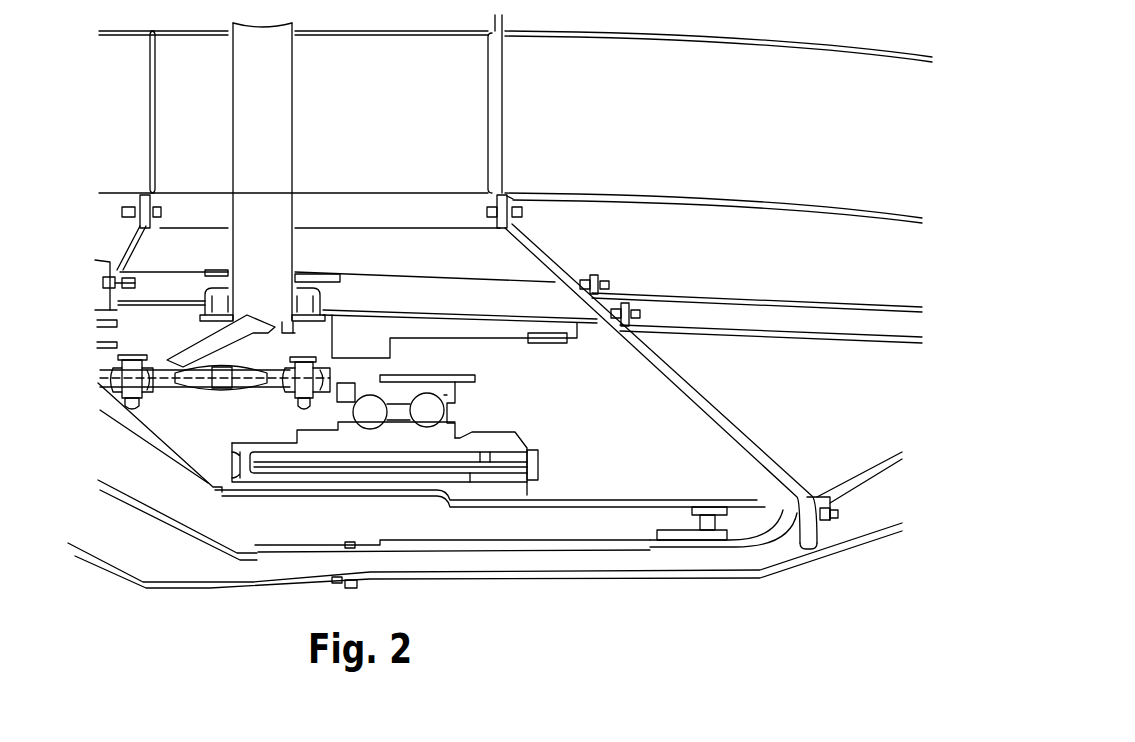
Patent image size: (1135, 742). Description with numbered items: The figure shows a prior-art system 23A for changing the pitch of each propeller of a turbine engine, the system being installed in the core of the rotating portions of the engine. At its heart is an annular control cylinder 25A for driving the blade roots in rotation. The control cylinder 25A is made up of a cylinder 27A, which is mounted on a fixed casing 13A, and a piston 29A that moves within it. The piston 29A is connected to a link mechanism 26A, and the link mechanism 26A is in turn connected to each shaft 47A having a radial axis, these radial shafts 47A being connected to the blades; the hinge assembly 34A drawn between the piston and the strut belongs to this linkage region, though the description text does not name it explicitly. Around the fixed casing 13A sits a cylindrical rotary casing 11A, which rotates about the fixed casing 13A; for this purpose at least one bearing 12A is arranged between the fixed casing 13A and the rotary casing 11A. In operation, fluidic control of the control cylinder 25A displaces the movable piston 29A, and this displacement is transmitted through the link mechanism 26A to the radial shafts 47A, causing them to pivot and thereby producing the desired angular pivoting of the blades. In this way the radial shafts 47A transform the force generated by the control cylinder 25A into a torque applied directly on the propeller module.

The cylindrical rotary casing 11A is at (725, 186).
The shaft having a radial axis 47A is at (262, 148).
The link mechanism 26A is at (168, 337).
The hinge assembly 34A is at (445, 392).
The control cylinder 25A is at (545, 434).
The cylinder 27A is at (617, 497).
The bearing 12A is at (715, 527).
The system for changing the pitch of each propeller 23A is at (190, 423).
The piston 29A is at (240, 448).
The fixed casing 13A is at (268, 488).